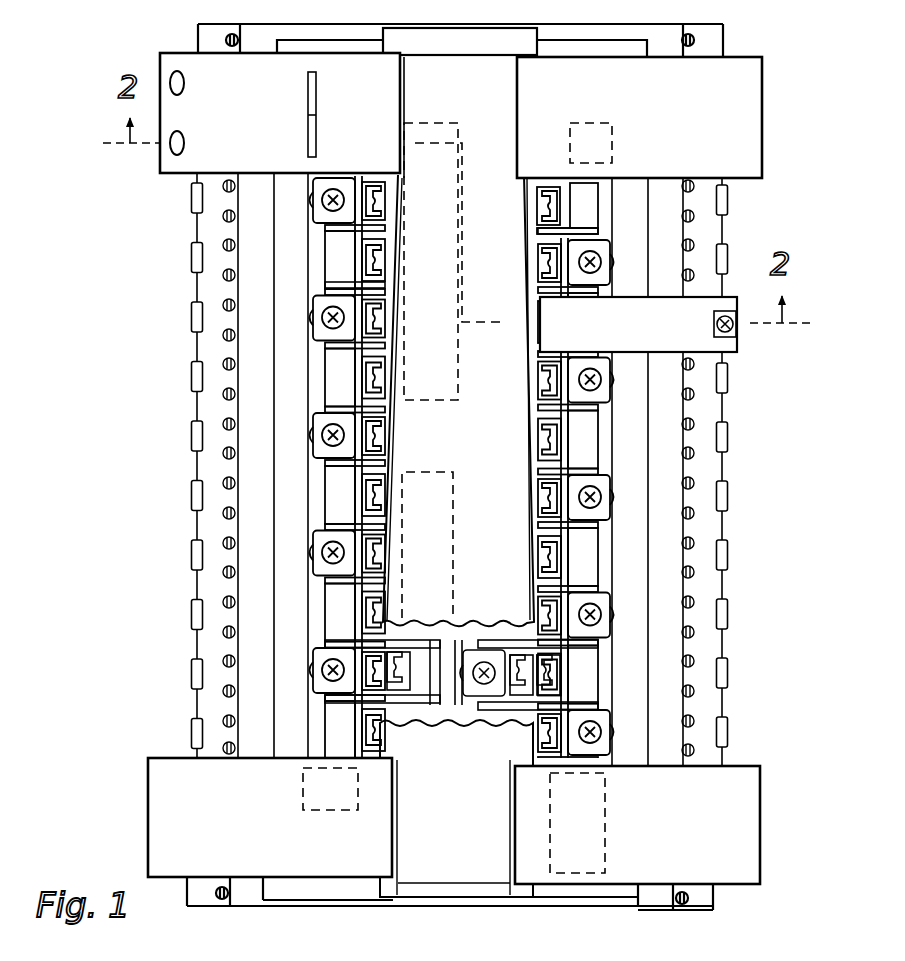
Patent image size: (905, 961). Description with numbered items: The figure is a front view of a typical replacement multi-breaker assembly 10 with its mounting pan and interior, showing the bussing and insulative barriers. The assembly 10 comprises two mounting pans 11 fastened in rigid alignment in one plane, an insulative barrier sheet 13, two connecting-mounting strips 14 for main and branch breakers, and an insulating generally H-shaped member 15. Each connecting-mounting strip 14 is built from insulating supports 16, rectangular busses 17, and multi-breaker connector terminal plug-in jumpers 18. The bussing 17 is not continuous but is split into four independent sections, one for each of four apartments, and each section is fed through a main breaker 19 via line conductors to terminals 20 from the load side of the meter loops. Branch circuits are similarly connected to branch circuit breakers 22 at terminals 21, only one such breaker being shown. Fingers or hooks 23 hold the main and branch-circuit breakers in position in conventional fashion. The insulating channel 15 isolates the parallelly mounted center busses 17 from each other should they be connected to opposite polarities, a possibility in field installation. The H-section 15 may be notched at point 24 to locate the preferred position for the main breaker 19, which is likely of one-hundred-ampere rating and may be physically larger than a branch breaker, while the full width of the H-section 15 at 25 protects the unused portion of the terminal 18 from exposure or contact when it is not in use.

The multi-breaker assembly 10 is at (772, 72).
The mounting pan 11 is at (190, 895).
The insulative barrier sheet 13 is at (582, 906).
The connecting-mounting strip 14 is at (300, 632).
The insulating H-shaped member 15 is at (498, 72).
The insulating support 16 is at (322, 382).
The rectangular bus 17 is at (320, 278).
The multi-breaker connector terminal plug-in jumper 18 is at (322, 693).
The main breaker 19 is at (165, 52).
The terminal 20 is at (186, 145).
The terminal 21 is at (738, 336).
The branch circuit breaker 22 is at (722, 298).
The finger or hook 23 is at (190, 488).
The notch point 24 is at (410, 87).
The full-width portion of H-section 25 is at (585, 416).